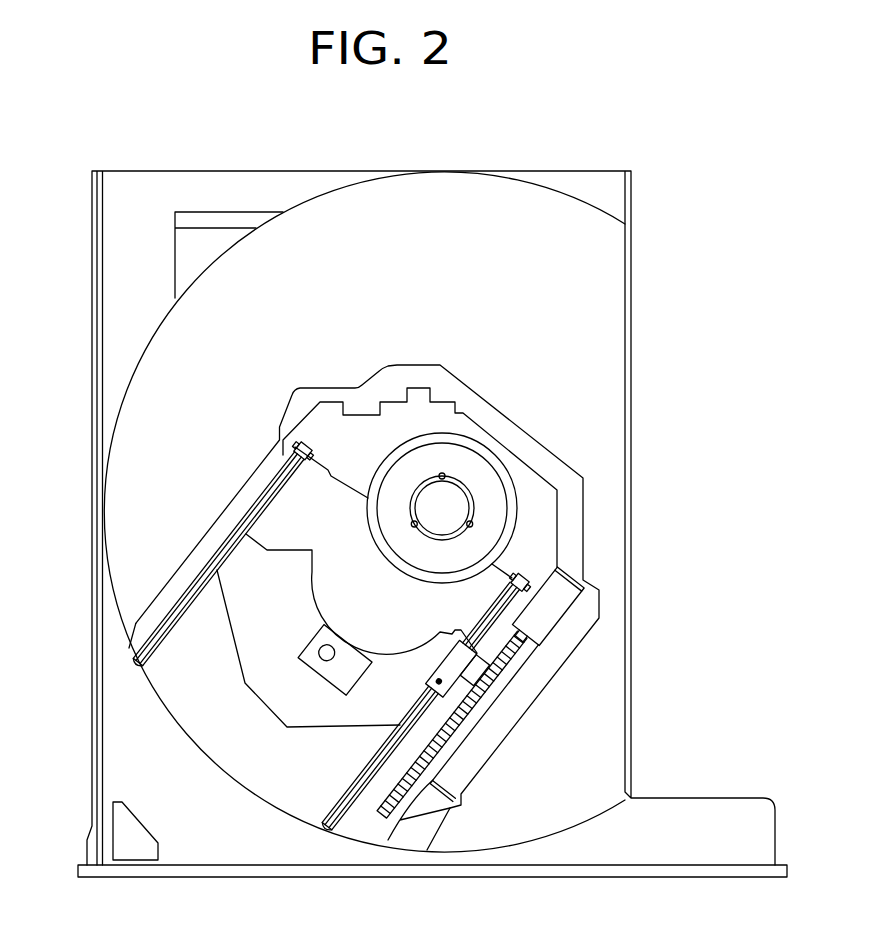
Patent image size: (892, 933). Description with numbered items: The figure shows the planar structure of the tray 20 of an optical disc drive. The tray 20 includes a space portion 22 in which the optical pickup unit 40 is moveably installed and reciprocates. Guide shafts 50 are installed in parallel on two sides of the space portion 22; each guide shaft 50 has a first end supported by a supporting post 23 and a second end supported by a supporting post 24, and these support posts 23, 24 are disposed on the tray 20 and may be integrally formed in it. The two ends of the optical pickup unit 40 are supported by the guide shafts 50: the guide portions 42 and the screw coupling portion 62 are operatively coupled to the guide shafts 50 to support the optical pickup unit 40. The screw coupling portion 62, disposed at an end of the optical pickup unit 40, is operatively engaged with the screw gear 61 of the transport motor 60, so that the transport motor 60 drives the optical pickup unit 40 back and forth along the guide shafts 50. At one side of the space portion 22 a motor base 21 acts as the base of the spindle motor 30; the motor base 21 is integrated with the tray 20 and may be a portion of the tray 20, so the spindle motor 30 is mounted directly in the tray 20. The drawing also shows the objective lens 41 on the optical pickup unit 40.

The tray 20 is at (741, 805).
The motor base 21 is at (376, 460).
The space portion 22 is at (256, 747).
The supporting post 23 is at (143, 665).
The supporting post 24 is at (295, 447).
The spindle motor 30 is at (460, 498).
The optical pickup unit 40 is at (288, 568).
The objective lens 41 is at (331, 648).
The guide portions 42 is at (233, 527).
The guide shafts 50 is at (190, 598).
The transport motor 60 is at (573, 592).
The screw gear 61 is at (450, 807).
The screw coupling portion 62 is at (490, 677).